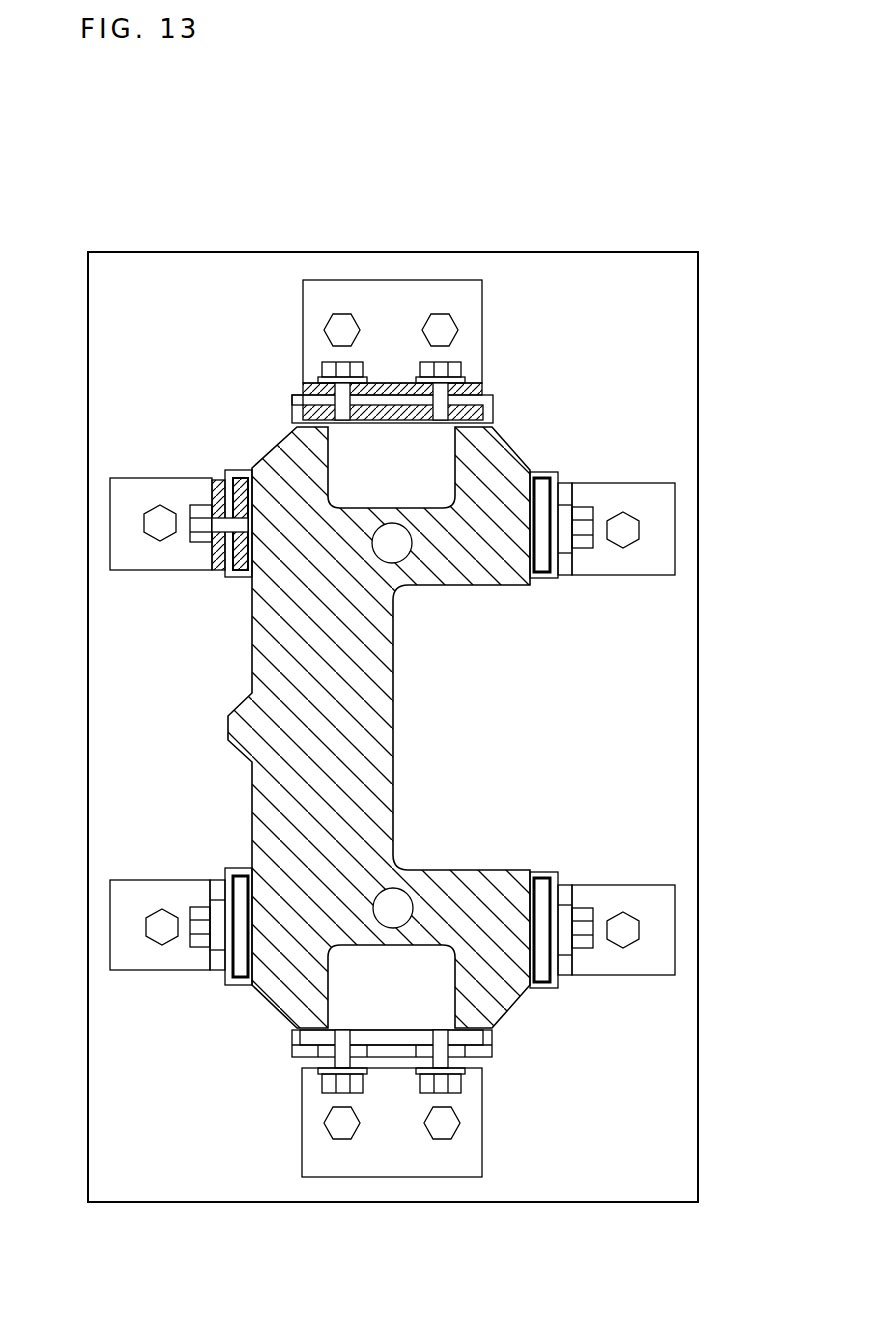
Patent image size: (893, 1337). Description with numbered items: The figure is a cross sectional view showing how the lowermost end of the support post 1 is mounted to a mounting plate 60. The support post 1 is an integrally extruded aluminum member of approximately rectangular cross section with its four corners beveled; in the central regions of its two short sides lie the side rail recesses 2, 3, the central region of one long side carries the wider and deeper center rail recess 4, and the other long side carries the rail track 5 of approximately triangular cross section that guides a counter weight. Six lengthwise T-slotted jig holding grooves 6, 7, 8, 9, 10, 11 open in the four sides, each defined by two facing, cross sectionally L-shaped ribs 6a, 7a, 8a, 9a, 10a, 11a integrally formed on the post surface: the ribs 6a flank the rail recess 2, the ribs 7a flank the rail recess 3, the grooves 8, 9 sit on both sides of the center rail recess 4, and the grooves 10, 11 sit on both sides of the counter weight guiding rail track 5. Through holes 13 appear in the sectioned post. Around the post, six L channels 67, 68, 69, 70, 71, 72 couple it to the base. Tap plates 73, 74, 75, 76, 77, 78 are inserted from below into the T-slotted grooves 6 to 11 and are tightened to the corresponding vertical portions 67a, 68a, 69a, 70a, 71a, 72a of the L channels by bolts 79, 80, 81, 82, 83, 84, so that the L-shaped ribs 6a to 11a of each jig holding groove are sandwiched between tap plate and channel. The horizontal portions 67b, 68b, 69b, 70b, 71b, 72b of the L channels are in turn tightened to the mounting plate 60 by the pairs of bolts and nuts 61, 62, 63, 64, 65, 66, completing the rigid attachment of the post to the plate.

The support post 1 is at (243, 773).
The rail recess 2 is at (417, 487).
The rail recess 3 is at (427, 952).
The center rail recess 4 is at (500, 738).
The rail track 5 is at (228, 727).
The T-slotted groove 6 is at (300, 408).
The L-shaped rib 6a is at (300, 397).
The T-slotted groove 7 is at (296, 1040).
The L-shaped rib 7a is at (536, 1069).
The T-slotted groove 8 is at (541, 480).
The L-shaped rib 8a is at (553, 580).
The T-slotted groove 9 is at (540, 968).
The L-shaped rib 9a is at (558, 980).
The T-slotted groove 10 is at (247, 563).
The L-shaped rib 10a is at (230, 470).
The T-slotted groove 11 is at (240, 877).
The L-shaped rib 11a is at (230, 982).
The through hole 13 is at (392, 543).
The mounting plate 60 is at (670, 338).
The bolt and nut pair 61 is at (391, 273).
The bolt and nut pair 62 is at (392, 1186).
The bolt and nut pair 63 is at (623, 520).
The bolt and nut pair 64 is at (625, 935).
The bolt and nut pair 65 is at (160, 535).
The bolt and nut pair 66 is at (158, 932).
The L channel 67 is at (467, 302).
The vertical portion 67a is at (478, 395).
The horizontal portion 67b is at (327, 288).
The L channel 68 is at (468, 1156).
The vertical portion 68a is at (390, 1066).
The horizontal portion 68b is at (448, 1163).
The L channel 69 is at (657, 570).
The vertical portion 69a is at (562, 573).
The horizontal portion 69b is at (665, 528).
The L channel 70 is at (658, 895).
The vertical portion 70a is at (565, 898).
The horizontal portion 70b is at (665, 930).
The L channel 71 is at (135, 565).
The vertical portion 71a is at (220, 560).
The horizontal portion 71b is at (118, 530).
The L channel 72 is at (127, 890).
The vertical portion 72a is at (218, 898).
The horizontal portion 72b is at (122, 927).
The tap plate 73 is at (388, 400).
The tap plate 74 is at (390, 1040).
The tap plate 75 is at (542, 552).
The tap plate 76 is at (505, 905).
The tap plate 77 is at (240, 480).
The tap plate 78 is at (243, 963).
The bolt 79 is at (340, 367).
The bolt 80 is at (508, 1113).
The bolt 81 is at (590, 507).
The bolt 82 is at (585, 927).
The bolt 83 is at (195, 515).
The bolt 84 is at (186, 962).